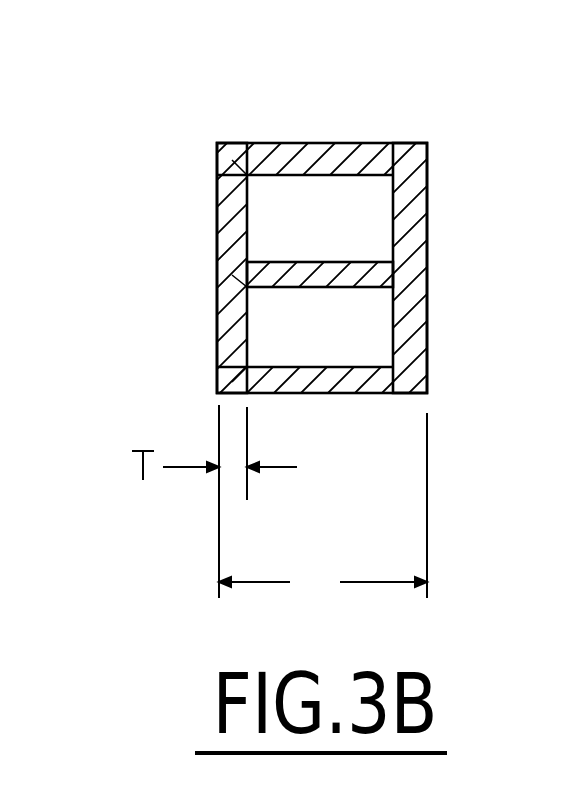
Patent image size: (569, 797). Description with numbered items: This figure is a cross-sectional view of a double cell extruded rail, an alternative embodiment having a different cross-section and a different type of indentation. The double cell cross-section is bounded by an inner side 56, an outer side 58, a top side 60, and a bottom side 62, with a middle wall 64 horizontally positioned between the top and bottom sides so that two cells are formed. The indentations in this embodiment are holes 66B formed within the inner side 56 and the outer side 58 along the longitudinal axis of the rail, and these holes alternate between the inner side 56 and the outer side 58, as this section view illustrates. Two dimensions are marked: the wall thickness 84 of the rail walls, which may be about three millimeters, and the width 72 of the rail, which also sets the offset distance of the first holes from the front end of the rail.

The inner side 56 is at (428, 198).
The outer side 58 is at (217, 202).
The top side 60 is at (307, 143).
The bottom side 62 is at (318, 395).
The middle wall 64 is at (328, 262).
The holes 66B is at (243, 165).
The width (W) 72 is at (340, 565).
The wall thickness (T) 84 is at (131, 451).